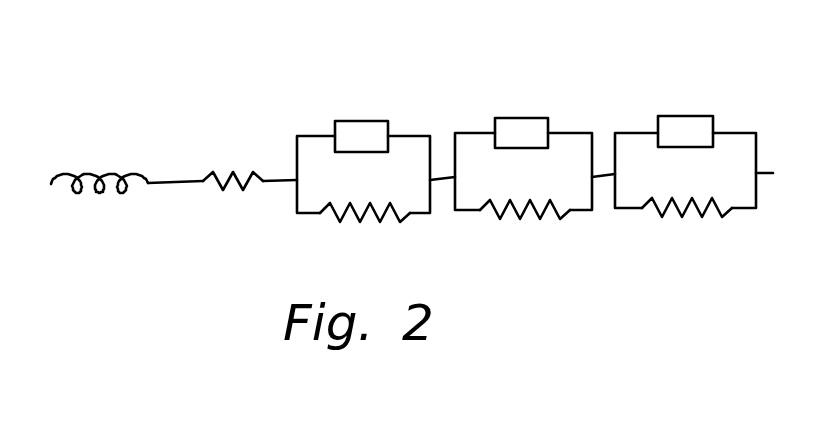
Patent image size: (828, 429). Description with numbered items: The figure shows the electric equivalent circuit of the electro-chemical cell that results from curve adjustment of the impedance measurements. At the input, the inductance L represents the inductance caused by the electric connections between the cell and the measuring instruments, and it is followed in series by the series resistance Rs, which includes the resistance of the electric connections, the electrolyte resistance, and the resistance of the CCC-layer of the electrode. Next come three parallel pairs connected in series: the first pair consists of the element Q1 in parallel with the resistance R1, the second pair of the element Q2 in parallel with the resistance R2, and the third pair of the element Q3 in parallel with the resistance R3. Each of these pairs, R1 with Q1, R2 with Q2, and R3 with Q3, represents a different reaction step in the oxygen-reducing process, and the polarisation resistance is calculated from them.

The inductance L is at (99, 163).
The series resistance Rs is at (233, 159).
The constant phase element Q1 is at (361, 135).
The resistance R1 is at (365, 195).
The constant phase element Q2 is at (521, 132).
The resistance R2 is at (525, 192).
The constant phase element Q3 is at (685, 131).
The resistance R3 is at (687, 191).